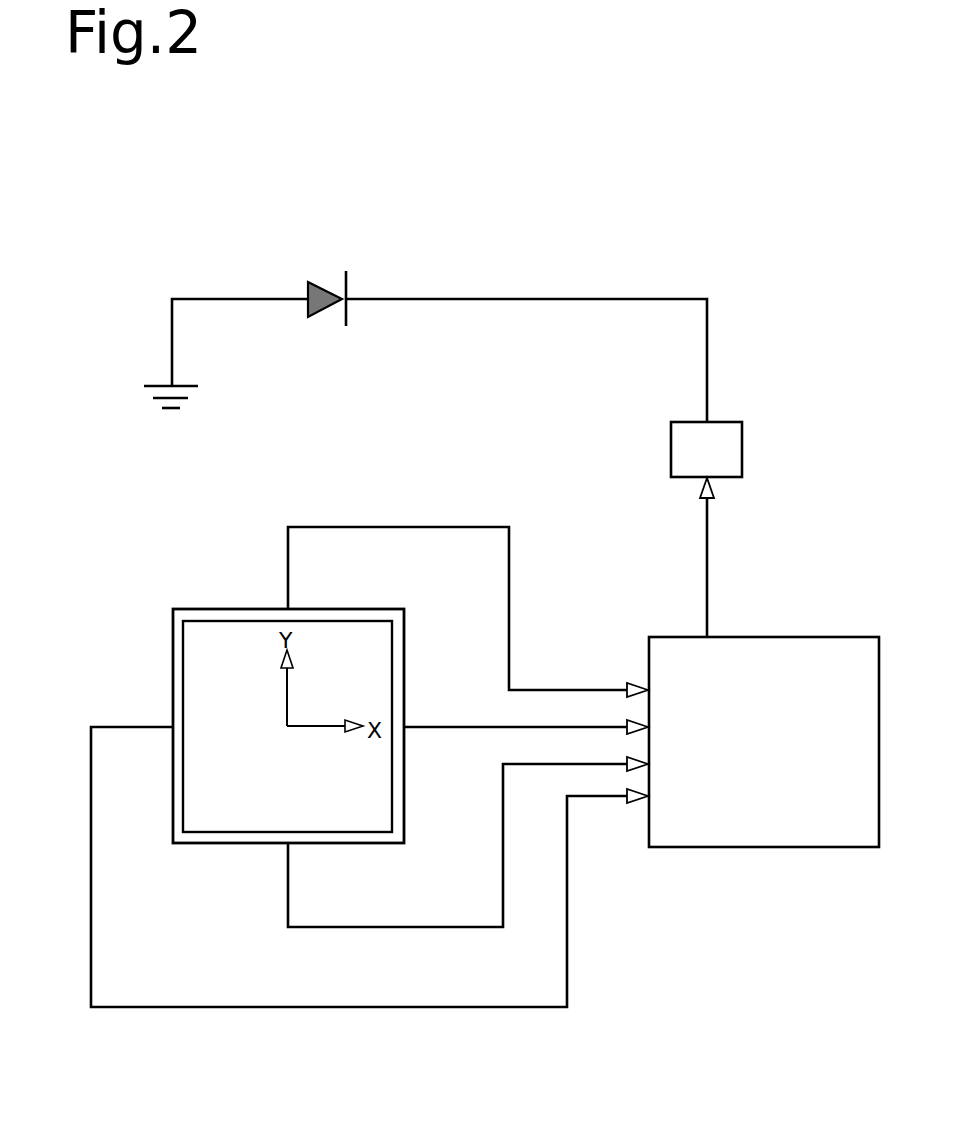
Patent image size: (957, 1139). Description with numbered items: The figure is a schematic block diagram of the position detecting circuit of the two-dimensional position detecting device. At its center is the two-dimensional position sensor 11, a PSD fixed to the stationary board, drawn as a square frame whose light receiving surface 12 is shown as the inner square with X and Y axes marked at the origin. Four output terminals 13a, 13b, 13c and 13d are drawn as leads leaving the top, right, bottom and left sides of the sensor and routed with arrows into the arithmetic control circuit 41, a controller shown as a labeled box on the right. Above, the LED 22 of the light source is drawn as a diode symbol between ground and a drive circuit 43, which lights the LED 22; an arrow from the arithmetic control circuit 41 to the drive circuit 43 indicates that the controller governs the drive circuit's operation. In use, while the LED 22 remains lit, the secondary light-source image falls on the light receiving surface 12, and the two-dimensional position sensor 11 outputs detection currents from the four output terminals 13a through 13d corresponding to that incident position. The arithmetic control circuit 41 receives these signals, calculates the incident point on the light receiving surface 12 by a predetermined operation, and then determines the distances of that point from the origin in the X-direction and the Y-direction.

The two-dimensional position sensor 11 is at (172, 610).
The light receiving surface 12 is at (228, 619).
The output terminal 13a is at (290, 607).
The output terminal 13b is at (405, 712).
The output terminal 13c is at (283, 846).
The output terminal 13d is at (157, 727).
The LED 22 is at (322, 282).
The arithmetic control circuit 41 is at (830, 637).
The drive circuit 43 is at (670, 432).